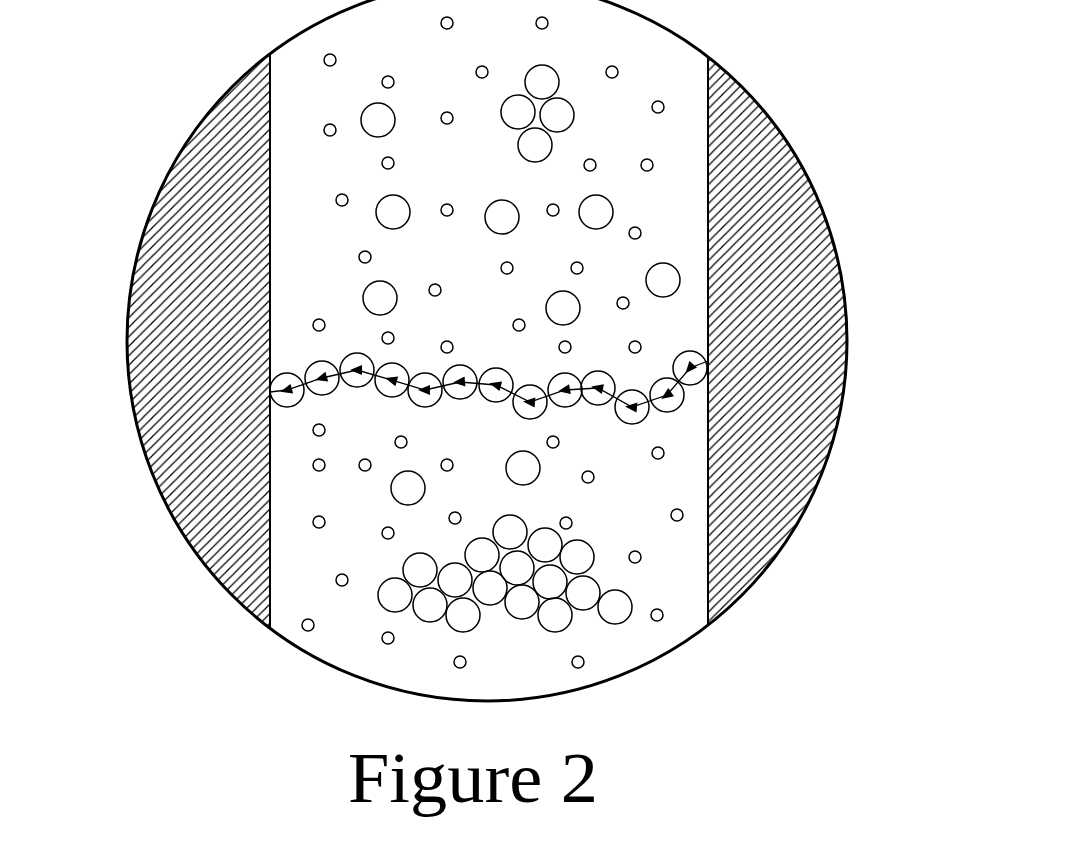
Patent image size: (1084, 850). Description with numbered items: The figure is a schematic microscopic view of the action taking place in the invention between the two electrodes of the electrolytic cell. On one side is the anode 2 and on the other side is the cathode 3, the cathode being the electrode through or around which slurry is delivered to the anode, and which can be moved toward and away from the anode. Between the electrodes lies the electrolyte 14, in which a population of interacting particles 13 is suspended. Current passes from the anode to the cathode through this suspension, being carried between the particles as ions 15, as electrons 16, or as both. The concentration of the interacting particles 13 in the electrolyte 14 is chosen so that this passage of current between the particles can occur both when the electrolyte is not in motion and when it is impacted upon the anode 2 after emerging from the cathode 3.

The anode 2 is at (742, 143).
The cathode 3 is at (215, 160).
The interacting particles 13 is at (615, 607).
The electrolyte 14 is at (670, 205).
The ions 15 is at (642, 345).
The electrons 16 is at (599, 417).